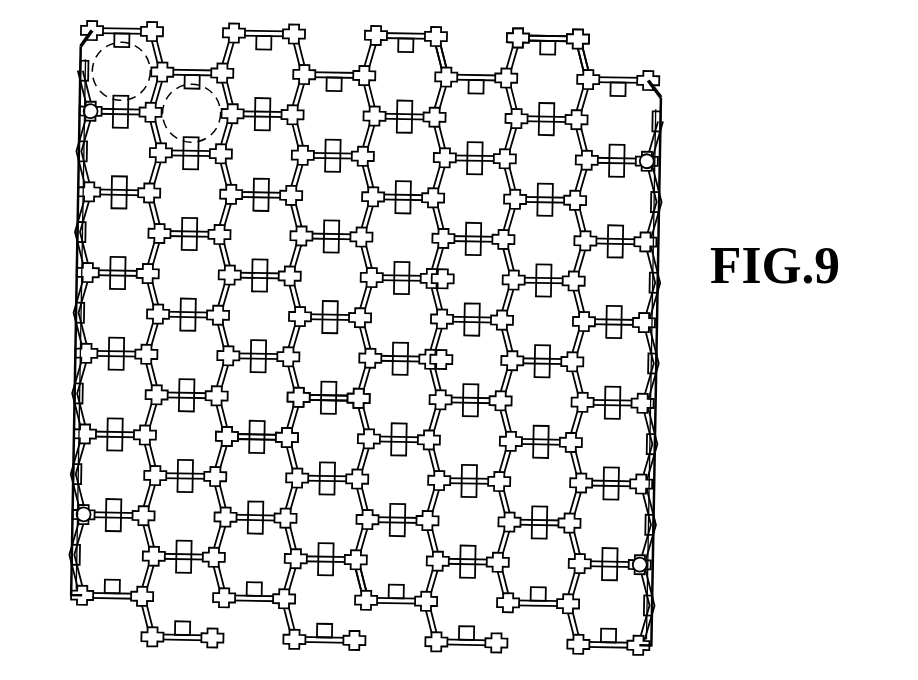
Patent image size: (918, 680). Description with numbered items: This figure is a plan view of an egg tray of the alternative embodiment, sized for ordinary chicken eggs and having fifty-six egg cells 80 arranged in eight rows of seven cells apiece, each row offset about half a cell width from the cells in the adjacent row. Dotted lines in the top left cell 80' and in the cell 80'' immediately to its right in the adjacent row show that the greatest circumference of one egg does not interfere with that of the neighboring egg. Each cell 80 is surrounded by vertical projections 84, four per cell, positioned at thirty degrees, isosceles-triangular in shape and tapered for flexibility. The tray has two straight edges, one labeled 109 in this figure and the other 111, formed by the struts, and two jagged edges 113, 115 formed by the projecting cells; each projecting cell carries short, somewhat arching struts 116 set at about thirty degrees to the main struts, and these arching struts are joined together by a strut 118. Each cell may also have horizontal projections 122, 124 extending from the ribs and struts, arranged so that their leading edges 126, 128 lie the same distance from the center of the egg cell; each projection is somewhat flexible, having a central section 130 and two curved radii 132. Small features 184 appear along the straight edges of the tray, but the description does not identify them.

The egg cell 80 is at (366, 316).
The top left cell 80' is at (121, 71).
The cell immediately to the right 80'' is at (191, 113).
The projection 84 is at (263, 187).
The left side wall 109 is at (79, 308).
The straight edge 111 is at (662, 440).
The jagged edge 113 is at (431, 36).
The jagged edge 115 is at (380, 606).
The arching strut 116 is at (587, 49).
The strut 118 is at (531, 36).
The horizontal projection 122 is at (546, 189).
The horizontal projection 124 is at (444, 199).
The leading edge 126 is at (448, 352).
The leading edge 128 is at (449, 269).
The central section 130 is at (323, 409).
The curved radius 132 is at (265, 426).
The locating pin hole 184 is at (80, 108).